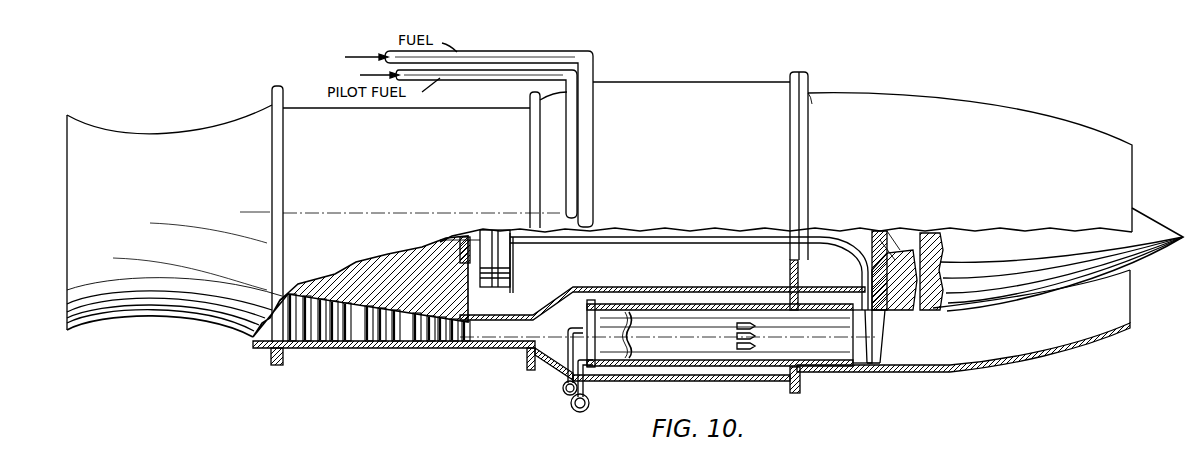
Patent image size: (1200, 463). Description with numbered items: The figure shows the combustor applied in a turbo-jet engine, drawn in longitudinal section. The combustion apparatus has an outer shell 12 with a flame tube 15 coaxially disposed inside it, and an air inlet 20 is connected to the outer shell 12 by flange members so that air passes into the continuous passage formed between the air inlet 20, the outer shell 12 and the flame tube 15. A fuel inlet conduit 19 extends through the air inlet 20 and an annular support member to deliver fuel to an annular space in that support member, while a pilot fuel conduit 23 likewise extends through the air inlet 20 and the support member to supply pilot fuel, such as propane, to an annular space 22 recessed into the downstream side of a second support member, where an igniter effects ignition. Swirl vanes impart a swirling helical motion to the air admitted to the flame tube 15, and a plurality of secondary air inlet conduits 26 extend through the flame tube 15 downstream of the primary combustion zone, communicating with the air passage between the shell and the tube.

The outer shell 12 is at (641, 288).
The flame tube 15 is at (698, 306).
The fuel inlet conduit 19 is at (584, 382).
The air inlet 20 is at (508, 326).
The annular space 22 is at (634, 334).
The pilot fuel conduit 23 is at (569, 337).
The secondary air inlet conduits 26 is at (756, 337).